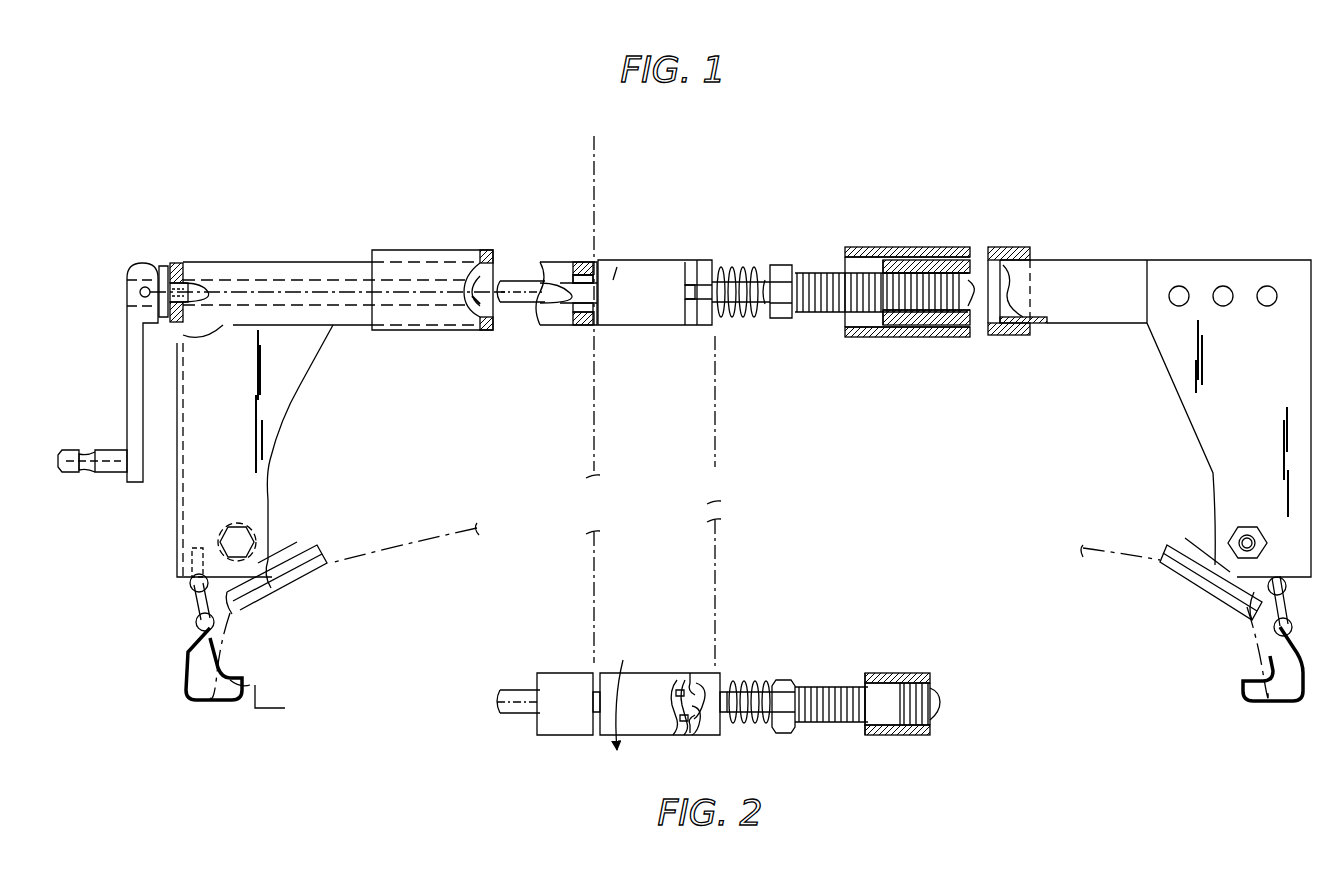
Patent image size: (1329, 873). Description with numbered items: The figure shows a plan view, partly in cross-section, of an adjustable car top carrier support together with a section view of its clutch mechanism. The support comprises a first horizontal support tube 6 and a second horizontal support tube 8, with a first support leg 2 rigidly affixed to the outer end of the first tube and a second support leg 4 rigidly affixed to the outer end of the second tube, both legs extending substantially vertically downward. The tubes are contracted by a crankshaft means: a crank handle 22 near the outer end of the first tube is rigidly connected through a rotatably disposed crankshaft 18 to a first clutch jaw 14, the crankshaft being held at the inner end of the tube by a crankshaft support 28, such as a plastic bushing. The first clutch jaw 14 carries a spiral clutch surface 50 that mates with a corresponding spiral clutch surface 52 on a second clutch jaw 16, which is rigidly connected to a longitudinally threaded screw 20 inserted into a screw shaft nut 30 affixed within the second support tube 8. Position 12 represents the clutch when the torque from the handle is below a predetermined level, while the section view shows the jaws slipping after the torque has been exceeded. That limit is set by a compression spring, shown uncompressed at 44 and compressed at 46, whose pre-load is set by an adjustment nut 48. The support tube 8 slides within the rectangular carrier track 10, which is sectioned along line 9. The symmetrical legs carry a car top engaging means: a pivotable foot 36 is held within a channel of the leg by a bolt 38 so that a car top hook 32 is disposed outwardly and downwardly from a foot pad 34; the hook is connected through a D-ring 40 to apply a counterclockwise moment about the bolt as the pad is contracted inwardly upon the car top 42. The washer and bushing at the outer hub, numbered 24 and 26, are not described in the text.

In FIG. 1, the first support leg 2 is at (212, 419).
In FIG. 1, the second support leg 4 is at (1257, 419).
In FIG. 1, the first horizontal support tube 6 is at (348, 257).
In FIG. 2, the first horizontal support tube 6 is at (577, 673).
In FIG. 1, the second horizontal support tube 8 is at (1090, 262).
In FIG. 2, the second horizontal support tube 8 is at (910, 678).
In FIG. 1, the section line 9- 9 is at (937, 180).
In FIG. 1, the carrier track 10 is at (462, 250).
In FIG. 1, the clutch mechanism position 12 is at (701, 352).
In FIG. 1, the first clutch jaw 14 is at (643, 283).
In FIG. 2, the first clutch jaw 14 is at (642, 673).
In FIG. 1, the second clutch jaw 16 is at (710, 260).
In FIG. 2, the second clutch jaw 16 is at (710, 680).
In FIG. 1, the crankshaft 18 is at (512, 304).
In FIG. 2, the crankshaft 18 is at (523, 687).
In FIG. 1, the longitudinally threaded screw 20 is at (832, 312).
In FIG. 2, the longitudinally threaded screw 20 is at (830, 724).
In FIG. 1, the crank handle 22 is at (127, 393).
In FIG. 1, the washer 24 is at (161, 256).
In FIG. 1, the bushing 26 is at (175, 264).
In FIG. 1, the crankshaft support 28 is at (573, 327).
In FIG. 1, the screw shaft nut 30 is at (945, 325).
In FIG. 2, the screw shaft nut 30 is at (880, 700).
In FIG. 1, the car top hook 32 is at (214, 702).
In FIG. 1, the foot pad 34 is at (327, 550).
In FIG. 1, the pivotable foot 36 is at (275, 543).
In FIG. 1, the bolt 38 is at (230, 525).
In FIG. 1, the D-ring 40 is at (197, 607).
In FIG. 1, the car top 42 is at (417, 532).
In FIG. 1, the compression spring 44 is at (727, 318).
In FIG. 2, the compression spring (compressed position) 46 is at (750, 687).
In FIG. 1, the adjustment nut 48 is at (780, 320).
In FIG. 2, the adjustment nut 48 is at (785, 683).
In FIG. 2, the spiral clutch surface 50 is at (686, 725).
In FIG. 2, the spiral clutch surface 52 is at (700, 718).